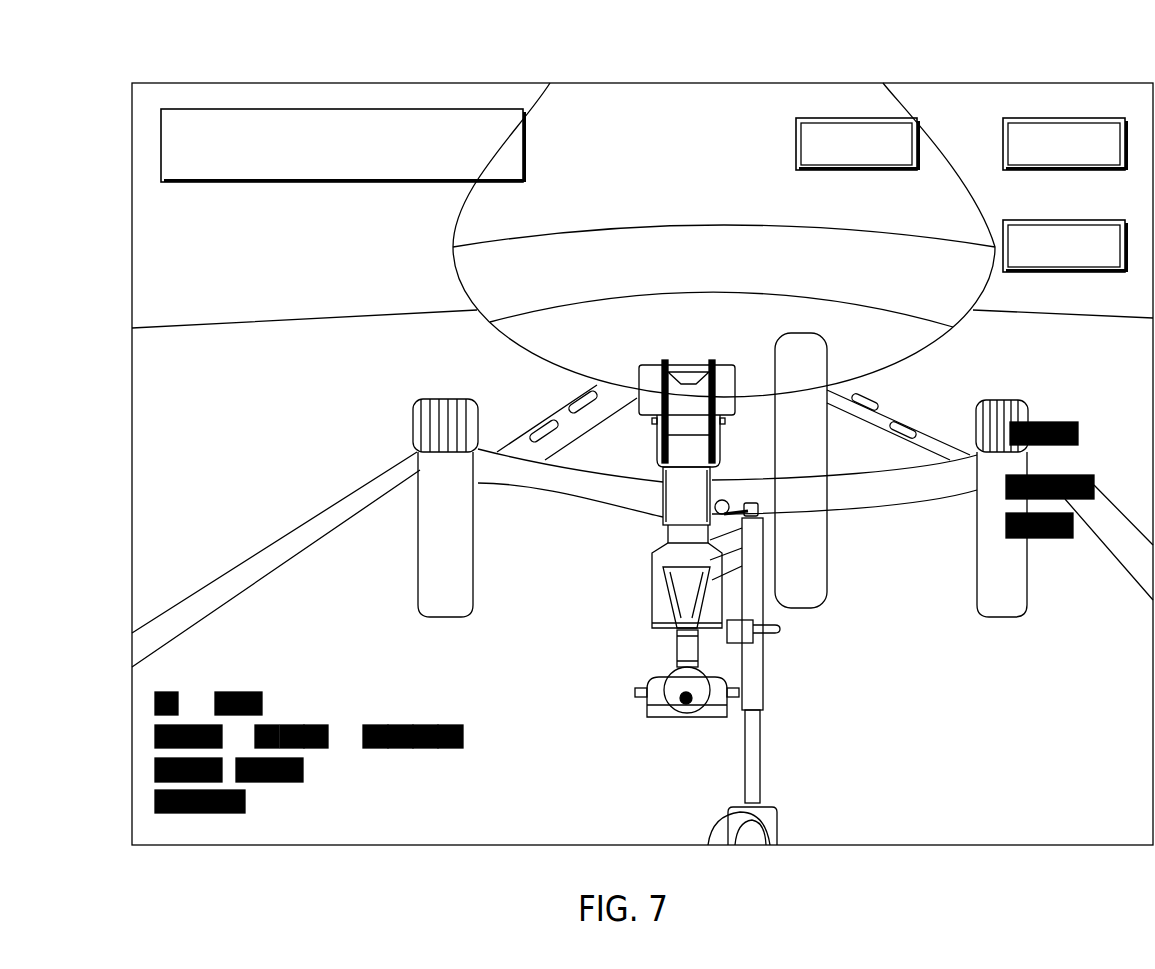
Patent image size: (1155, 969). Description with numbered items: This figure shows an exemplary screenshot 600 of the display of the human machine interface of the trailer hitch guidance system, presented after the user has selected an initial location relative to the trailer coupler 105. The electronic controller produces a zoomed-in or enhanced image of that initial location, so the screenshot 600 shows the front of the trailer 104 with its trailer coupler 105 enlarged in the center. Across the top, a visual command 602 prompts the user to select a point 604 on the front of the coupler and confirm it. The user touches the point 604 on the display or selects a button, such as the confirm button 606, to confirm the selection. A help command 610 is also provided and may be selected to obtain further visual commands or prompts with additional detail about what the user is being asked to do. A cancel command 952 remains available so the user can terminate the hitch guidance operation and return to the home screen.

The screenshot 600 is at (126, 62).
The visual command 602 is at (523, 148).
The confirm button 606 is at (795, 144).
The cancel command 952 is at (1003, 145).
The help command 610 is at (1003, 246).
The trailer 104 is at (913, 490).
The trailer coupler 105 is at (688, 657).
The point 604 is at (712, 700).